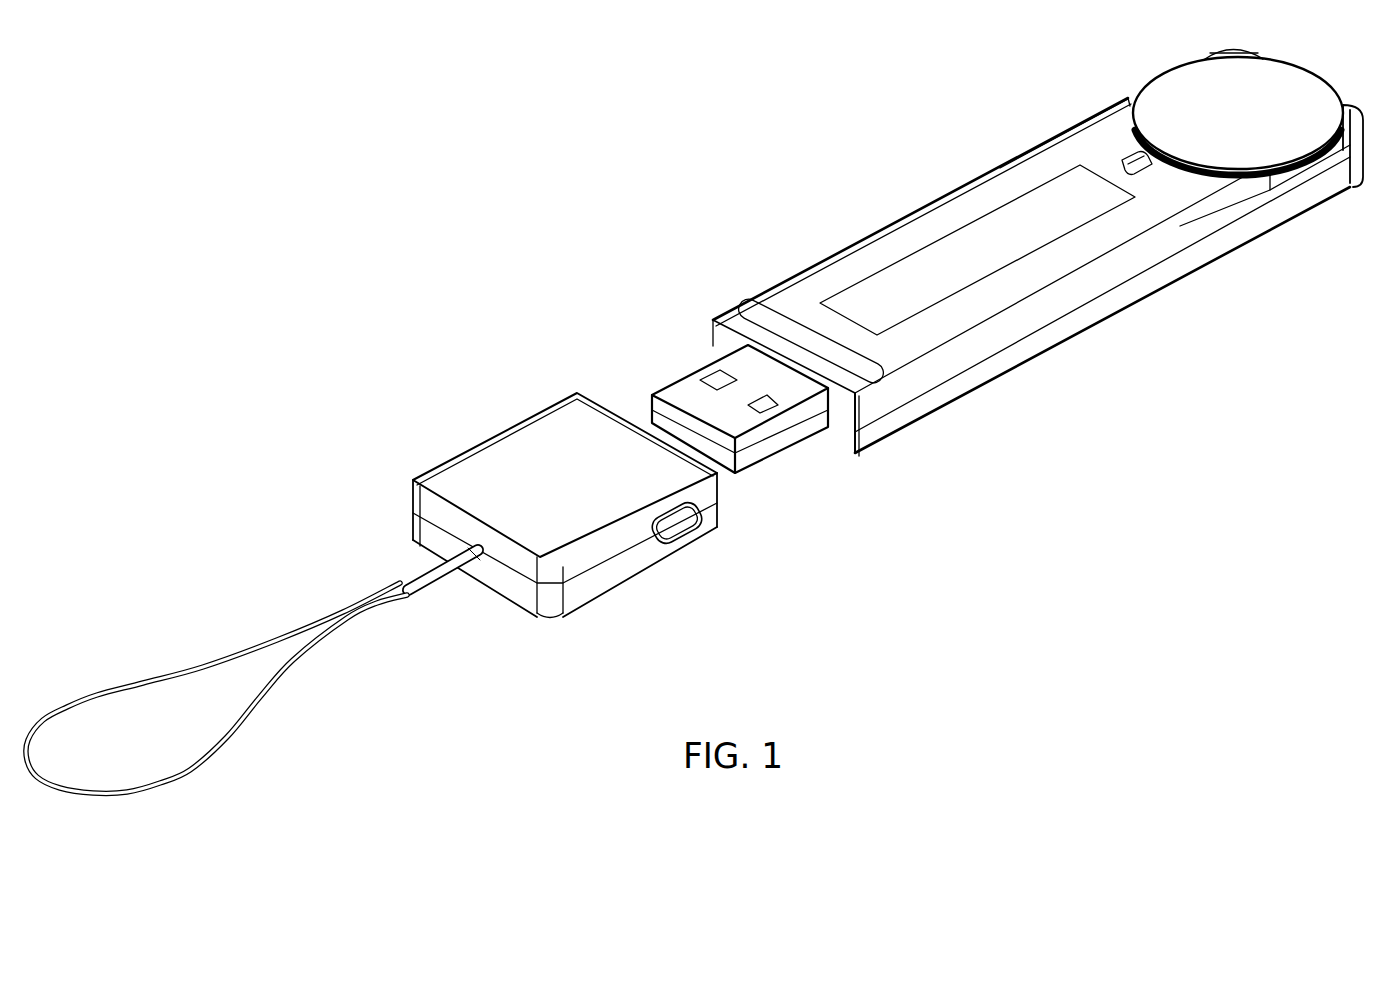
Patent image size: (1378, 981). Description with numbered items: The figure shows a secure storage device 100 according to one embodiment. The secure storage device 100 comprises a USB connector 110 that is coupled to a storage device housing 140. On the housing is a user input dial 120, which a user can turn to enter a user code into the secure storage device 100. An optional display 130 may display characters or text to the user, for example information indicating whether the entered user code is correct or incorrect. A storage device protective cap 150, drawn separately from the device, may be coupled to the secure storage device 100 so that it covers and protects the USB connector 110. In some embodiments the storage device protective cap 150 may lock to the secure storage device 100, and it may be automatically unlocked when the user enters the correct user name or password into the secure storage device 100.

The secure storage device 100 is at (752, 280).
The USB connector 110 is at (655, 392).
The user input dial 120 is at (1158, 73).
The display 130 is at (903, 258).
The storage device housing 140 is at (1033, 137).
The storage device protective cap 150 is at (467, 424).